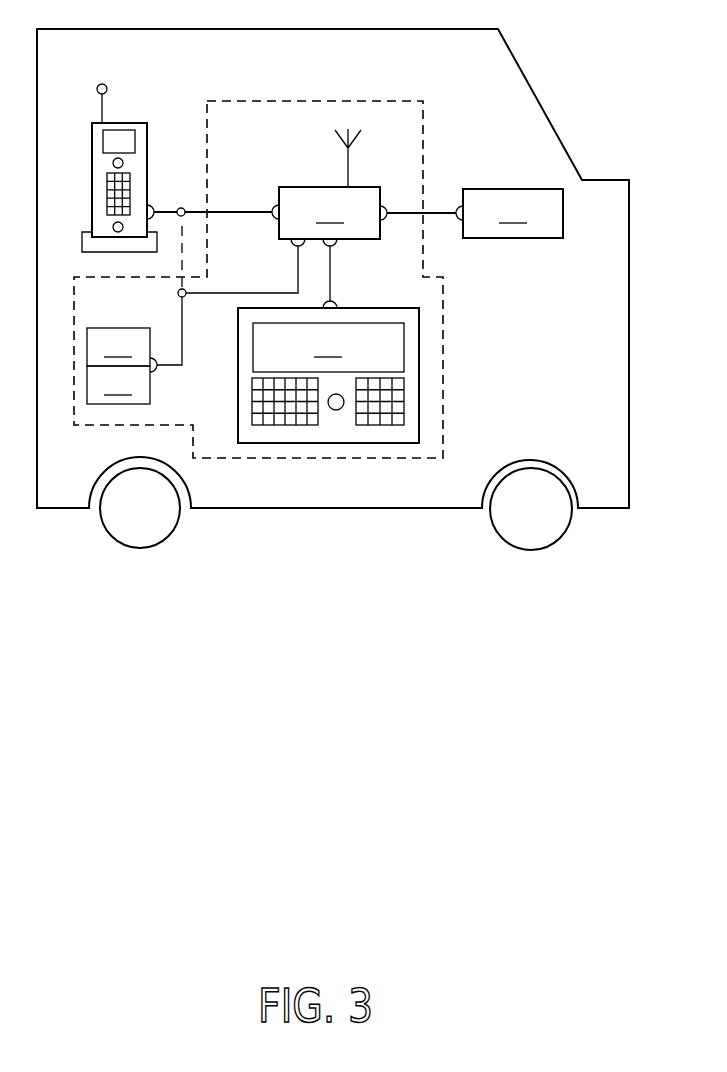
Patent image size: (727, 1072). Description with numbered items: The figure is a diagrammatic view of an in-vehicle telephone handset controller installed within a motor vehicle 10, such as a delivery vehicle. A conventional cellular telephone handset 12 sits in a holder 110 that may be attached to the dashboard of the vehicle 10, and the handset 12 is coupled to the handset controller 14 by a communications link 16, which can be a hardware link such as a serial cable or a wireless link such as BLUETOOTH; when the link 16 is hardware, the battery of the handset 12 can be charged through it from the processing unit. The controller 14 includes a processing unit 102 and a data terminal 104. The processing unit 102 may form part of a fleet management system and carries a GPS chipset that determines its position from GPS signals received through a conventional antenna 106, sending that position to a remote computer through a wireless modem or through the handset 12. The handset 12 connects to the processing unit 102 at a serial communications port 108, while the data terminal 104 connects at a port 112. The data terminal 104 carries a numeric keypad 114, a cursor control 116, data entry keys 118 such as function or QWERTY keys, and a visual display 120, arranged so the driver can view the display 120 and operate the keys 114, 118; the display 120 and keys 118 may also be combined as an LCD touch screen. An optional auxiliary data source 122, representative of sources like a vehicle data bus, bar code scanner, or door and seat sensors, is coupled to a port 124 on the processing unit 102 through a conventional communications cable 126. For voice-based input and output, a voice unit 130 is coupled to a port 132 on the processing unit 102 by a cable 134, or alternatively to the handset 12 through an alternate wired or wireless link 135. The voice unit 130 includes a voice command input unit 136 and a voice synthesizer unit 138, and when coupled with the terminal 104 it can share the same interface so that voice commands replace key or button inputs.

The motor vehicle 10 is at (629, 445).
The cellular telephone handset 12 is at (92, 143).
The handset controller 14 is at (443, 392).
The communications link 16 is at (191, 196).
The processing unit 102 is at (329, 213).
The data terminal 104 is at (395, 443).
The antenna 106 is at (348, 178).
The serial communications port 108 is at (272, 208).
The holder 110 is at (82, 233).
The port 112 is at (340, 246).
The numeric keypad 114 is at (380, 405).
The cursor control 116 is at (336, 408).
The data entry keys 118 is at (280, 405).
The visual display 120 is at (328, 347).
The auxiliary data source 122 is at (509, 213).
The port 124 is at (386, 206).
The communications cable 126 is at (441, 215).
The voice unit 130 is at (152, 388).
The port 132 is at (290, 246).
The cable 134 is at (218, 294).
The alternate link 135 is at (184, 231).
The voice command input unit 136 is at (118, 347).
The voice synthesizer unit 138 is at (118, 385).